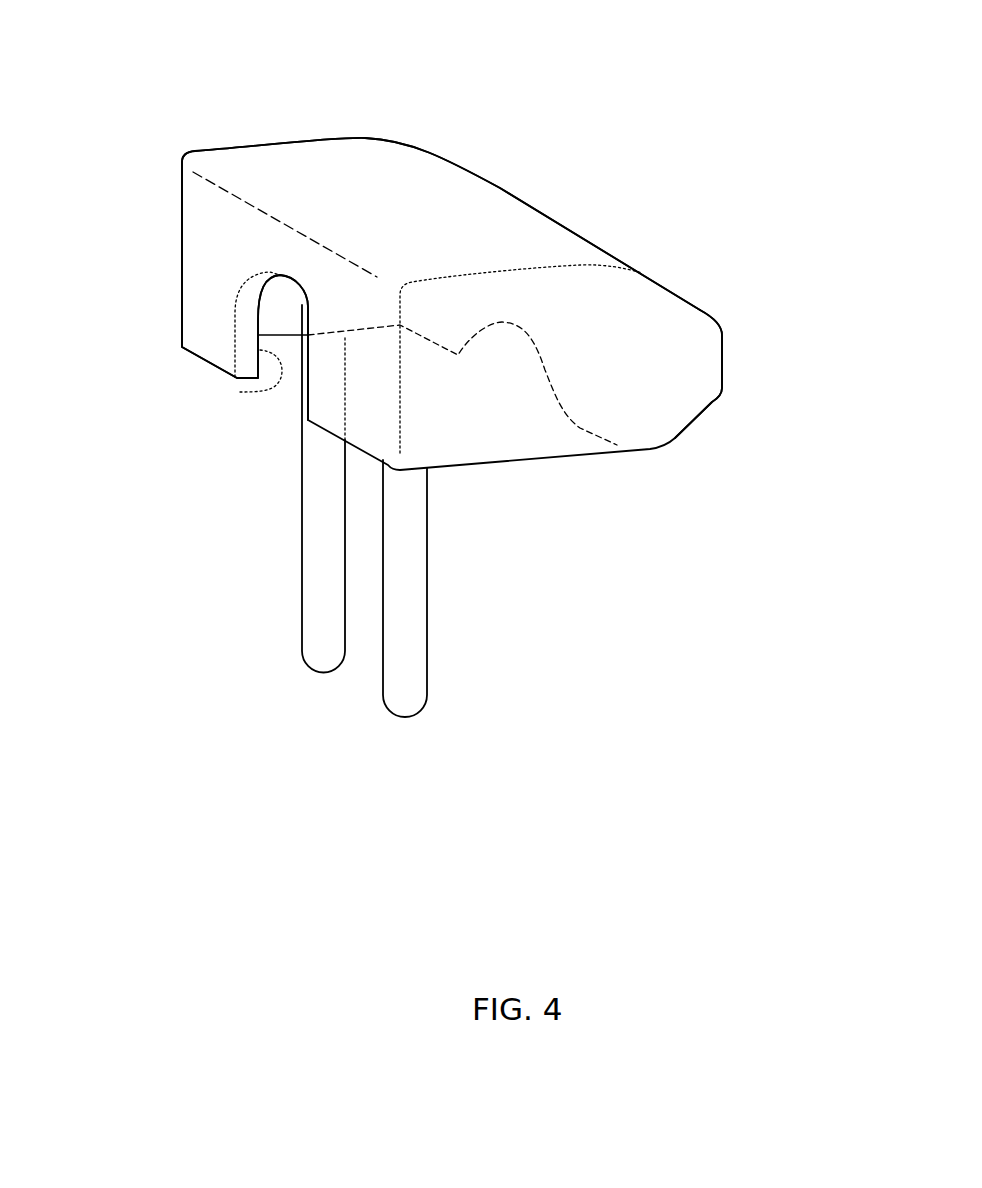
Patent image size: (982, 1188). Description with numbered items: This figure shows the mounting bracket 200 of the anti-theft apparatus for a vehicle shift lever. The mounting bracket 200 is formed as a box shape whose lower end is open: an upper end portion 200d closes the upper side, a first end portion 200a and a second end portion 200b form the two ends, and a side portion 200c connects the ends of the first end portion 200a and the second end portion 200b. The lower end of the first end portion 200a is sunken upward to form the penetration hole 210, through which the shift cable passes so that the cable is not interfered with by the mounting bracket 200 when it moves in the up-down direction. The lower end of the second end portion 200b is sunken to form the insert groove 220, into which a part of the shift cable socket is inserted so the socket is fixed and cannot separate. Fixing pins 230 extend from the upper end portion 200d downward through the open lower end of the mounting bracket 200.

The mounting bracket 200 is at (310, 131).
The first end portion 200a is at (202, 283).
The second end portion 200b is at (722, 362).
The side portion 200c is at (585, 437).
The upper end portion 200d is at (445, 180).
The penetration hole 210 is at (258, 390).
The insert groove 220 is at (513, 372).
The fixing pins 230 is at (327, 672).